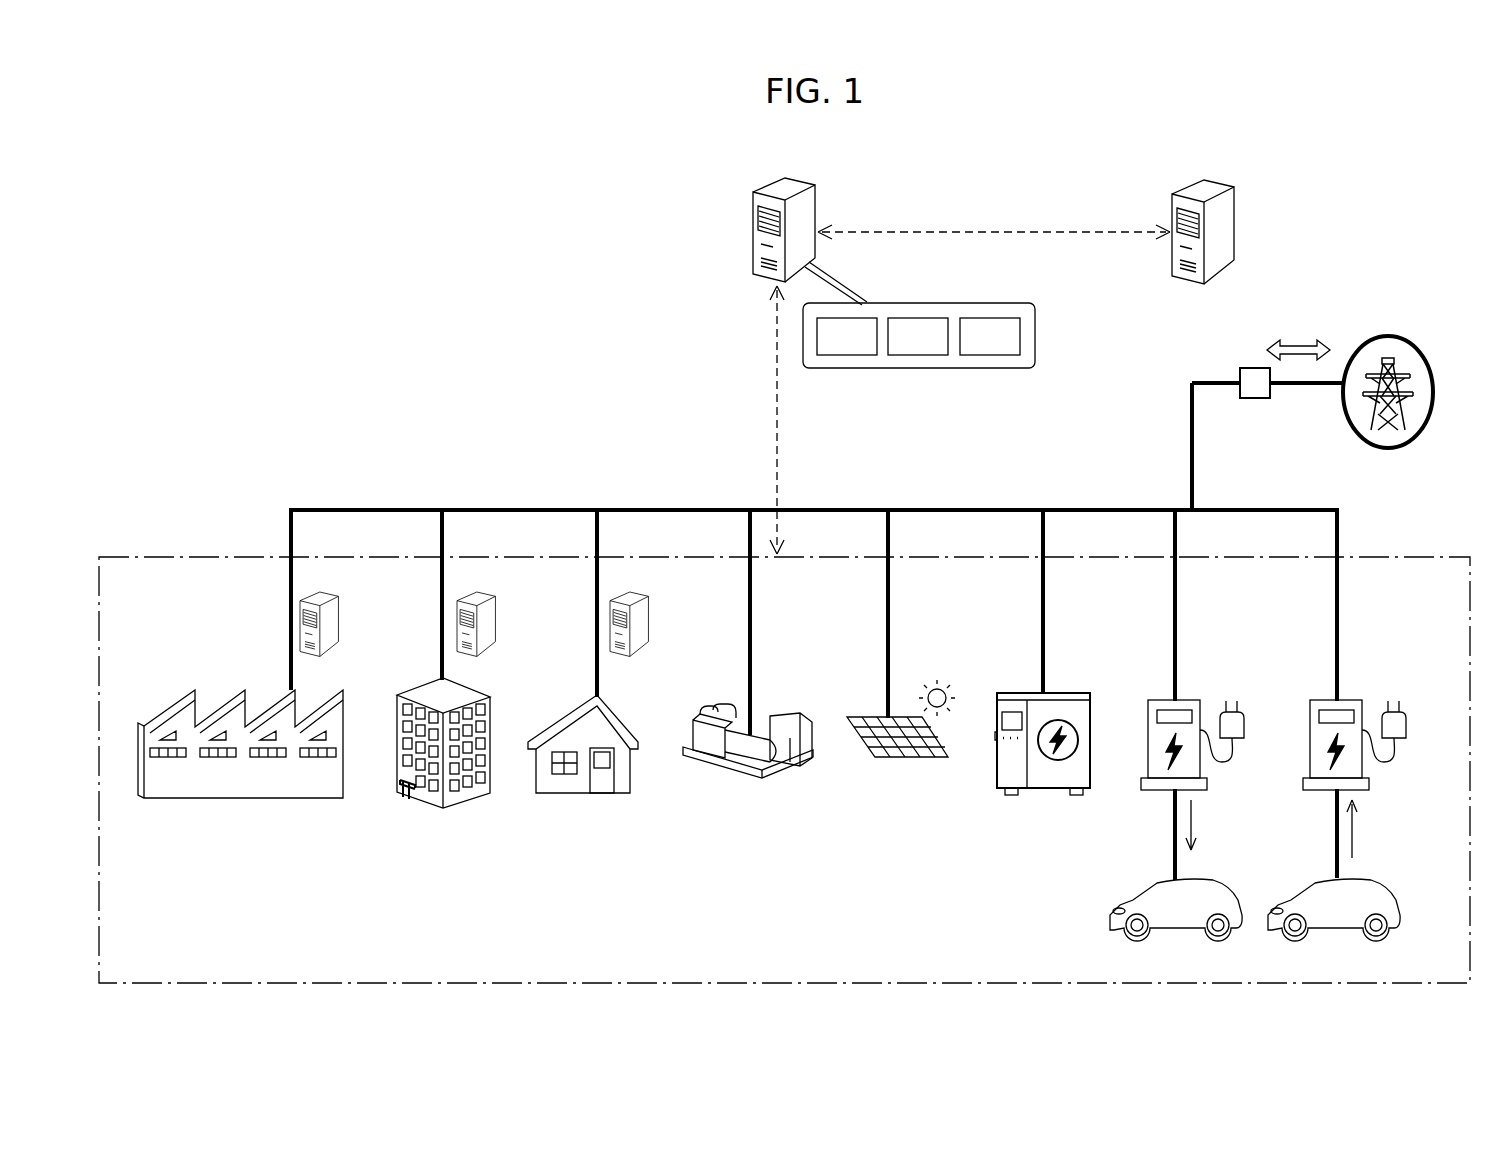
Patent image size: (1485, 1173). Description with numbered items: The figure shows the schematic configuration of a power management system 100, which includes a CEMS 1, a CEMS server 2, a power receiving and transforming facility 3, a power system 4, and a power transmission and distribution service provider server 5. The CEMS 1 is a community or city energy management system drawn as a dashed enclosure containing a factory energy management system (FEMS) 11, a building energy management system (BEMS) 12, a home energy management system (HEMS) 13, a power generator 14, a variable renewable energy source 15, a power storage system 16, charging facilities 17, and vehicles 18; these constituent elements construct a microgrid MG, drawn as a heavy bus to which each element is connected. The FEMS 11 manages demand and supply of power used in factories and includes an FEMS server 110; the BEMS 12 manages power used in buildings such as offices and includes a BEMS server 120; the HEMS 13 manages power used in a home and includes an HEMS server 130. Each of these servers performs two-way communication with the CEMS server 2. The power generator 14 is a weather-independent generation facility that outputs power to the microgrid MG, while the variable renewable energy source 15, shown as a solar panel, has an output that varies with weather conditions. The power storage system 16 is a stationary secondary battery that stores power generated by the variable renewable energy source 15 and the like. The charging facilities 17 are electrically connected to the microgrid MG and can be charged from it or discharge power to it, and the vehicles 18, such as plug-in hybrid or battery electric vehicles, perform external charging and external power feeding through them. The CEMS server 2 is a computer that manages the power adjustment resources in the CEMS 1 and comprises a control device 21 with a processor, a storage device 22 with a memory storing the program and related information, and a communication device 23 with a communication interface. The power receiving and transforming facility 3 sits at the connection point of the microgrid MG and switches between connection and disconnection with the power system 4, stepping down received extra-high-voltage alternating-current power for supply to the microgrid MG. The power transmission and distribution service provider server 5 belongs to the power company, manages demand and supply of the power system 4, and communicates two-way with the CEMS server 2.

The power management system 100 is at (197, 180).
The CEMS 1 is at (193, 554).
The CEMS server 2 is at (804, 180).
The power receiving and transforming facility 3 is at (1272, 399).
The power system 4 is at (1405, 348).
The power transmission and distribution service provider server 5 is at (1219, 182).
The control device 21 is at (847, 356).
The storage device 22 is at (917, 356).
The communication device 23 is at (990, 356).
The factory energy management system (FEMS) 11 is at (183, 688).
The building energy management system (BEMS) 12 is at (463, 686).
The home energy management system (HEMS) 13 is at (617, 720).
The power generator 14 is at (789, 712).
The variable renewable energy source 15 is at (865, 716).
The power storage system 16 is at (1070, 694).
The charging facilities 17 is at (1191, 700).
The vehicles 18 is at (1195, 880).
The FEMS server 110 is at (339, 597).
The BEMS server 120 is at (491, 597).
The HEMS server 130 is at (640, 597).
The microgrid MG is at (287, 501).